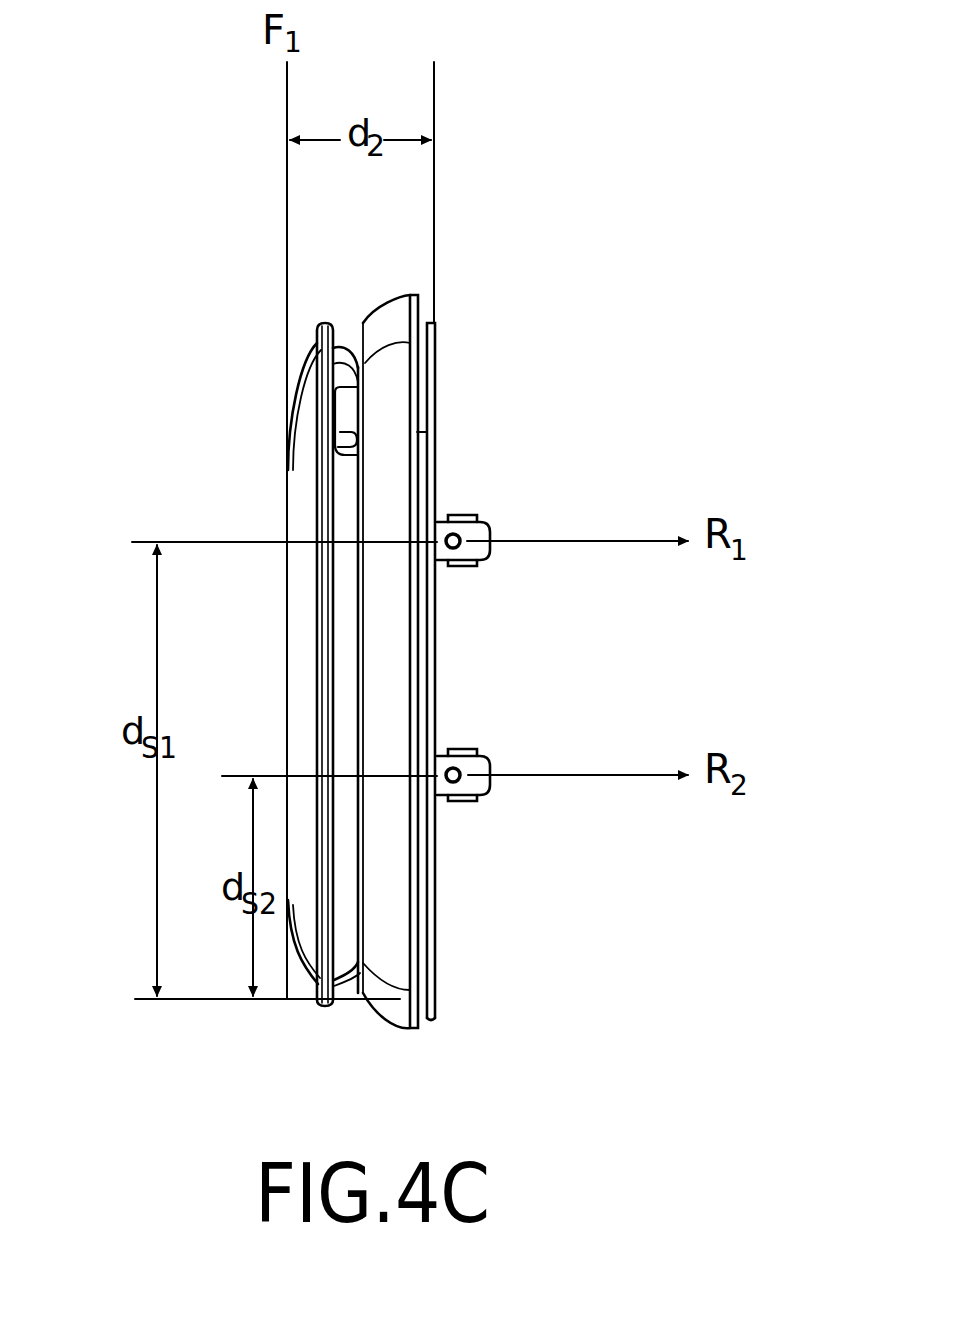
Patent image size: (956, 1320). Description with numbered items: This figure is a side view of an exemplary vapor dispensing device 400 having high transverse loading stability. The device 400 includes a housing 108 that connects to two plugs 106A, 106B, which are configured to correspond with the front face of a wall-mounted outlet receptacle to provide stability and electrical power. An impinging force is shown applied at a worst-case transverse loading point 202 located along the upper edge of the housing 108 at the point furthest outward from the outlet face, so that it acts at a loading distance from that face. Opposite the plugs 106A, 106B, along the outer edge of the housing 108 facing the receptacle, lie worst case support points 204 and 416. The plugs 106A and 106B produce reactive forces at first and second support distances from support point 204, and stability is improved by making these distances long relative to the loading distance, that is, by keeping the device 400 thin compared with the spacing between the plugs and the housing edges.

The vapor dispensing device 400 is at (455, 437).
The worst-case transverse loading point 202 is at (288, 478).
The housing 108 is at (390, 334).
The worst case support point 416 is at (427, 650).
The worst case support point 204 is at (433, 1002).
The plug 106A is at (472, 561).
The plug 106B is at (517, 776).